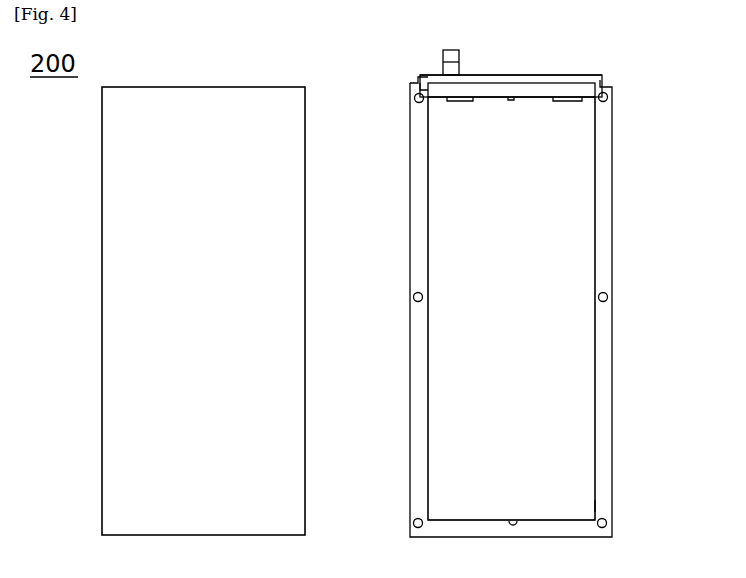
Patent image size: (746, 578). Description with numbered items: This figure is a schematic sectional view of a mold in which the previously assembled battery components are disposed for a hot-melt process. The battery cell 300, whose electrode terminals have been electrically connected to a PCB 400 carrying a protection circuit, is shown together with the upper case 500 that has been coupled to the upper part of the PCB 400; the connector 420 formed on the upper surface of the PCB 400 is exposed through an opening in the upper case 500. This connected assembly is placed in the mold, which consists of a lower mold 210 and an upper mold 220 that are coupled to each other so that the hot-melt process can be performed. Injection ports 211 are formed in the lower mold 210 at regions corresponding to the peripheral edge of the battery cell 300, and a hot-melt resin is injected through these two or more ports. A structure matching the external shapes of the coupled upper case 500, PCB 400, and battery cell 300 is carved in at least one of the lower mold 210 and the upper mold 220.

The upper mold 220 is at (104, 288).
The lower mold 210 is at (414, 242).
The injection ports 211 is at (413, 297).
The battery cell 300 is at (440, 432).
The PCB 400 is at (575, 90).
The connector 420 is at (445, 62).
The upper case 500 is at (414, 80).